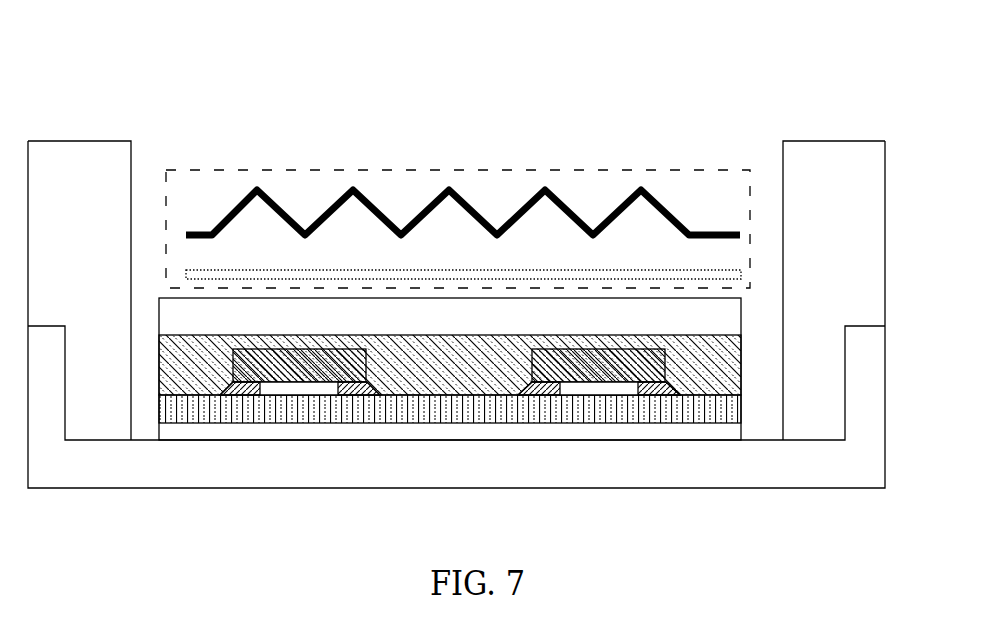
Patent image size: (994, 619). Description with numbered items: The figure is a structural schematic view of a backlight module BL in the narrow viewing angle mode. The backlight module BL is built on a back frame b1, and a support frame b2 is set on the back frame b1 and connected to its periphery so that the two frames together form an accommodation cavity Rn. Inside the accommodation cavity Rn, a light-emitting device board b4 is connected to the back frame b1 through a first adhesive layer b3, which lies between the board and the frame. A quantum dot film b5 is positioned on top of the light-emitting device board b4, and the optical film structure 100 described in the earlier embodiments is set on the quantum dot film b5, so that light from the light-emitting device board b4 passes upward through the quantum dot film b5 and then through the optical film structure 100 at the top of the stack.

The backlight module BL is at (873, 50).
The back frame b1 is at (645, 473).
The support frame b2 is at (817, 150).
The first adhesive layer b3 is at (529, 423).
The light-emitting device board b4 is at (360, 395).
The quantum dot film b5 is at (202, 323).
The optical film structure 100 is at (458, 170).
The accommodation cavity Rn is at (180, 137).